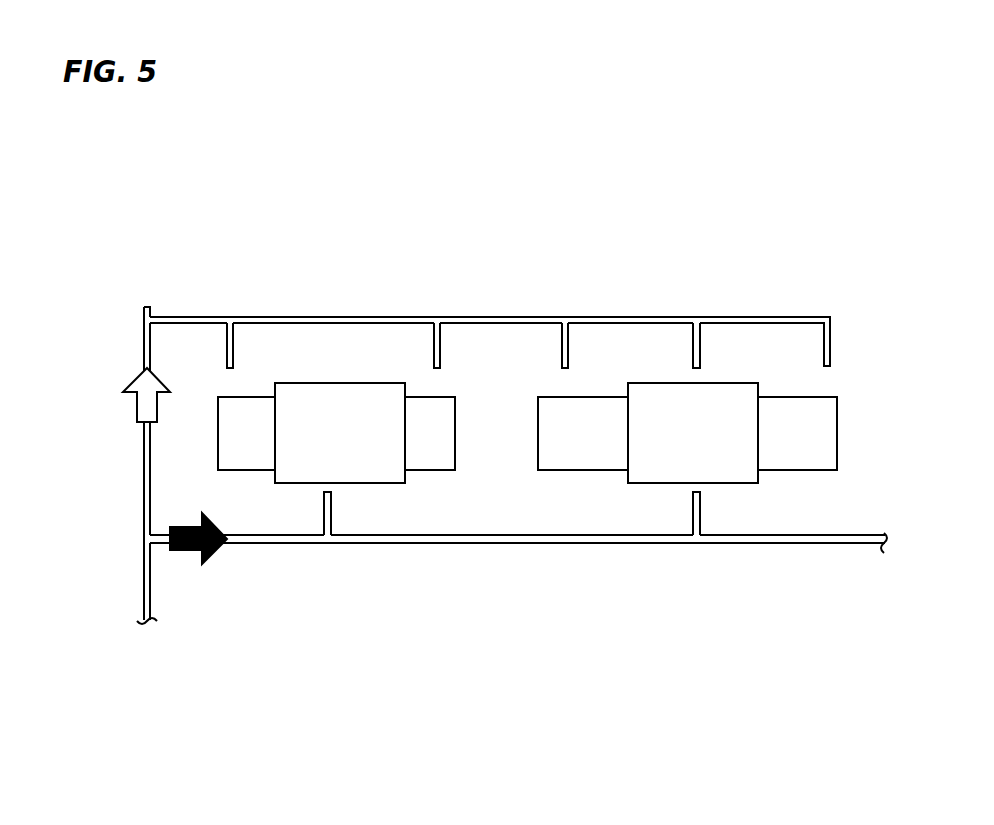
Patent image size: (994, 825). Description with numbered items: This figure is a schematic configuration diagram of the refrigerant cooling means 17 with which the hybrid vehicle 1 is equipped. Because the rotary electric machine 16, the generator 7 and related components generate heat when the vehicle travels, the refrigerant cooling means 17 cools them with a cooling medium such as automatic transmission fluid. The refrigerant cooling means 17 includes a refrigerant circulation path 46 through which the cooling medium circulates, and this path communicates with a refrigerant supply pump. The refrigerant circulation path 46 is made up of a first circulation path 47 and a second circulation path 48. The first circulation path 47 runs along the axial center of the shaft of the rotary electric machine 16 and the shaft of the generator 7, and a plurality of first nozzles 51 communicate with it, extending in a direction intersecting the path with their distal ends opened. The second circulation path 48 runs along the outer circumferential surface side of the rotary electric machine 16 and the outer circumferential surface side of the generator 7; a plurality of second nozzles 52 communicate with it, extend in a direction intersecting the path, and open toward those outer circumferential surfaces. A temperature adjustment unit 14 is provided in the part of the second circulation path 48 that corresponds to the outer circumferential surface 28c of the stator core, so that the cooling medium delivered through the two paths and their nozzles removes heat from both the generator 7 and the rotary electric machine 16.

The hybrid vehicle 1 is at (539, 143).
The refrigerant cooling means 17 is at (436, 225).
The refrigerant circulation path 46 is at (368, 306).
The second circulation path 48 is at (511, 317).
The second nozzles 52 is at (233, 348).
The first circulation path 47 is at (510, 543).
The first nozzles 51 is at (331, 517).
The generator 7 is at (345, 383).
The temperature adjustment unit 14 is at (718, 306).
The rotary electric machine 16 is at (795, 397).
The outer circumferential surface 28c is at (648, 383).